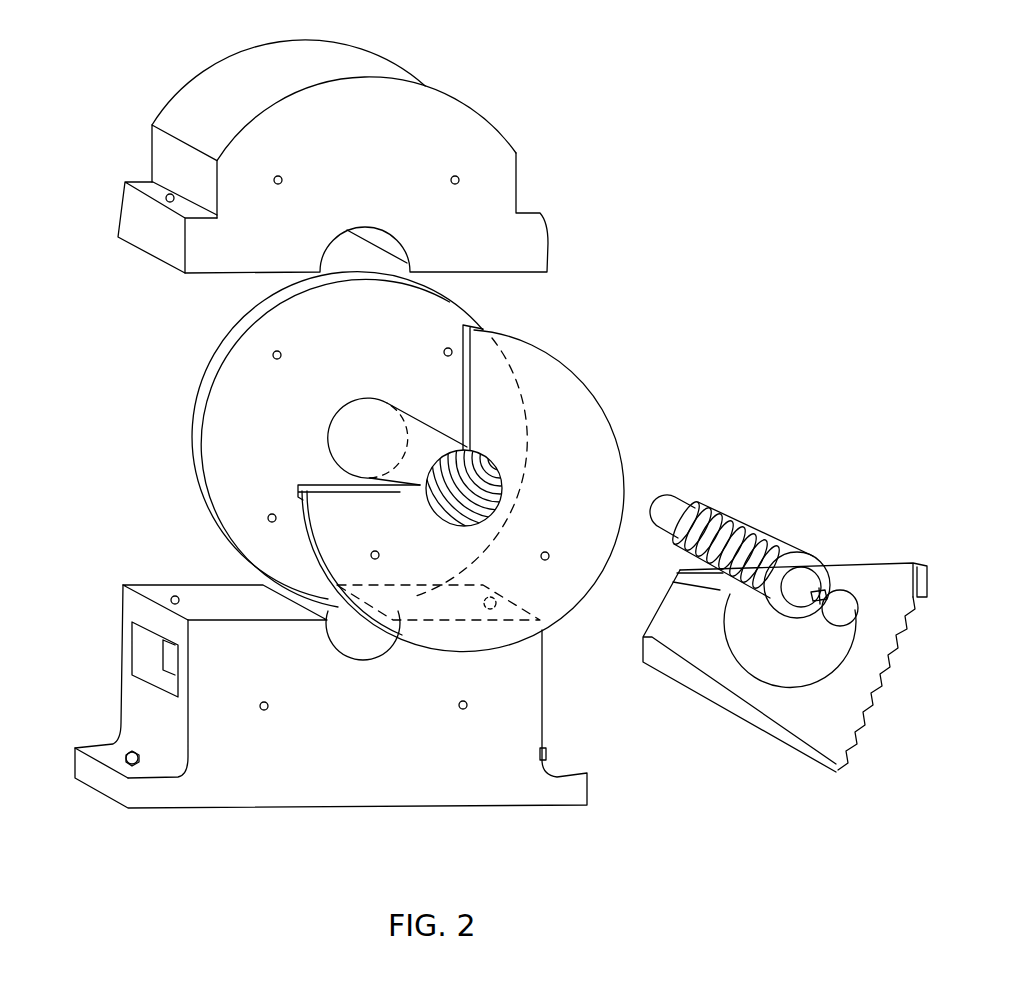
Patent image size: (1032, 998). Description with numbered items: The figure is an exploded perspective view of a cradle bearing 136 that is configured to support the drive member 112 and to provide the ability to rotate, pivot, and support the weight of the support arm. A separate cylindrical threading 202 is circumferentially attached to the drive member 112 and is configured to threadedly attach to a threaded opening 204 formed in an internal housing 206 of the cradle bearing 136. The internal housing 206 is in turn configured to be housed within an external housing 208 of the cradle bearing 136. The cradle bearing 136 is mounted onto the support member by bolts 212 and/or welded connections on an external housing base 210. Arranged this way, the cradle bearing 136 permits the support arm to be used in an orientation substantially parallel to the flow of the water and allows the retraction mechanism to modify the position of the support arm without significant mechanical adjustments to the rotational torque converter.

The cradle bearing 136 is at (652, 172).
The external housing 208 is at (117, 221).
The internal housing 206 is at (617, 423).
The threaded opening 204 is at (483, 457).
The external housing base 210 is at (123, 583).
The bolts 212 is at (115, 747).
The cylindrical threading 202 is at (763, 530).
The drive member 112 is at (837, 593).